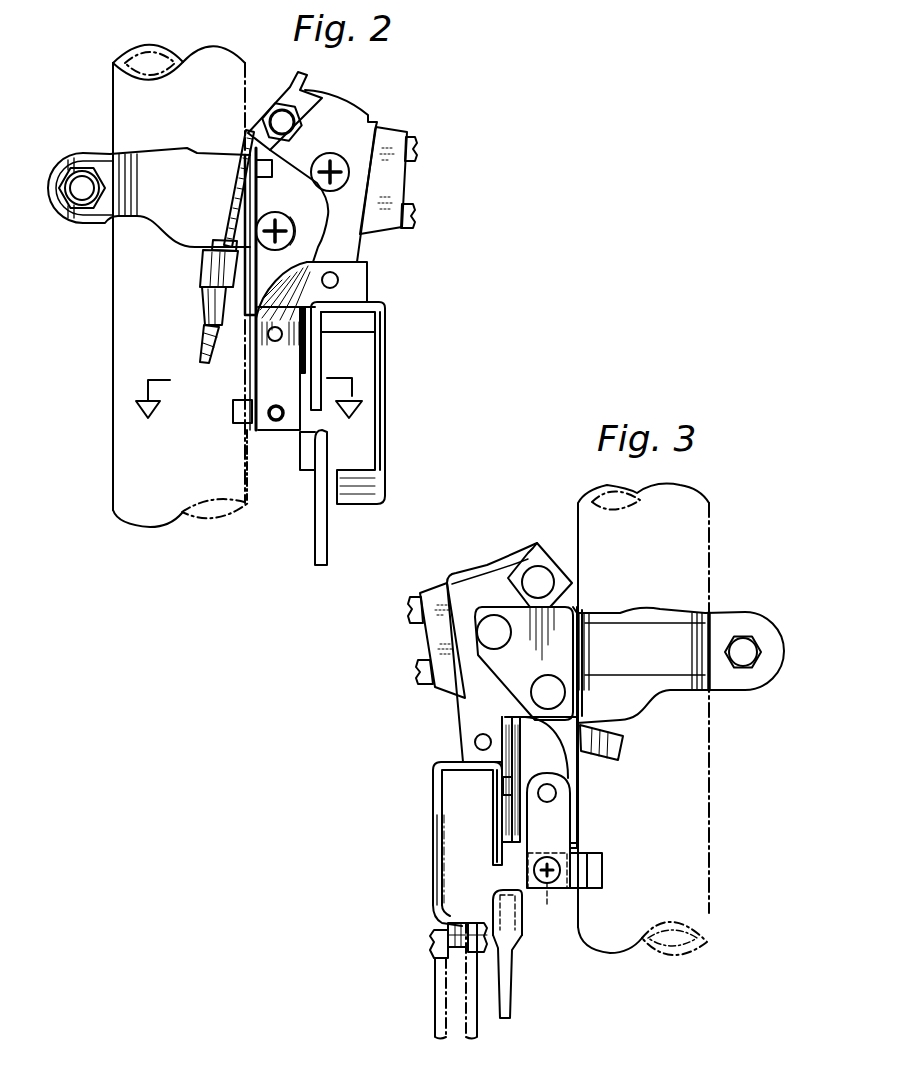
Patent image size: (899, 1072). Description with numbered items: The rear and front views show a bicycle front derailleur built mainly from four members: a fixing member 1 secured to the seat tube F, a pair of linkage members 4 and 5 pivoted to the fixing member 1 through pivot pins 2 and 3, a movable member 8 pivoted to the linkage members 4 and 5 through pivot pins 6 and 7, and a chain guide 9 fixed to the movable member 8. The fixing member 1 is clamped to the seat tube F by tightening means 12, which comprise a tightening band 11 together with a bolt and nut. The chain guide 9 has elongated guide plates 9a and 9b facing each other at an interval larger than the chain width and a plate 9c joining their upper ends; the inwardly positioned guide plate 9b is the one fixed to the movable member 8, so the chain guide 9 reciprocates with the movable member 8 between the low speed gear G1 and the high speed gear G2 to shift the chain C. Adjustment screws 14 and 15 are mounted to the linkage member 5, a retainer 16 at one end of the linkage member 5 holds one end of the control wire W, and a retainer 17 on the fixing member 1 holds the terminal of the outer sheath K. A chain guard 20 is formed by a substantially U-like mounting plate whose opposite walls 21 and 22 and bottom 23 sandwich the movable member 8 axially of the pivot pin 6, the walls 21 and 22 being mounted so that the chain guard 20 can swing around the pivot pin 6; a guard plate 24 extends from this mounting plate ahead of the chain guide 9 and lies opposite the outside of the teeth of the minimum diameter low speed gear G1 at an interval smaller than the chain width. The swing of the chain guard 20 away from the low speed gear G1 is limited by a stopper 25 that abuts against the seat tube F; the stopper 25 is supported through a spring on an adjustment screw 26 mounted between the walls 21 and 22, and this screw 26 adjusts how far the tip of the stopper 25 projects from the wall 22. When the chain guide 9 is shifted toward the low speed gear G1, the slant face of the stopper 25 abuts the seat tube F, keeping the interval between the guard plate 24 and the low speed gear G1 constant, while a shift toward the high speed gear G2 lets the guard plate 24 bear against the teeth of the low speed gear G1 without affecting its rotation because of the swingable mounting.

In FIG. 2, the fixing member 1 is at (322, 218).
In FIG. 3, the fixing member 1 is at (530, 625).
In FIG. 2, the pivot pin 2 is at (294, 236).
In FIG. 3, the pivot pin 2 is at (545, 690).
In FIG. 2, the pivot pin 3 is at (337, 168).
In FIG. 3, the pivot pin 3 is at (488, 630).
In FIG. 2, the linkage member 4 is at (262, 267).
In FIG. 3, the linkage member 4 is at (567, 752).
In FIG. 2, the linkage member 5 is at (366, 202).
In FIG. 3, the linkage member 5 is at (478, 674).
In FIG. 2, the pivot pin 6 is at (271, 340).
In FIG. 3, the pivot pin 6 is at (556, 794).
In FIG. 2, the pivot pin 7 is at (339, 280).
In FIG. 3, the pivot pin 7 is at (474, 742).
In FIG. 2, the movable member 8 is at (358, 292).
In FIG. 2, the chain guide 9 is at (386, 342).
In FIG. 3, the chain guide 9 is at (430, 774).
In FIG. 2, the guide plate 9a is at (384, 400).
In FIG. 3, the guide plate 9a is at (433, 800).
In FIG. 2, the guide plate 9b is at (324, 366).
In FIG. 3, the guide plate 9b is at (493, 812).
In FIG. 2, the plate 9c is at (372, 318).
In FIG. 2, the tightening band 11 is at (96, 208).
In FIG. 3, the tightening band 11 is at (722, 672).
In FIG. 2, the tightening means 12 is at (78, 192).
In FIG. 3, the tightening means 12 is at (750, 657).
In FIG. 2, the adjustment screw 14 is at (418, 148).
In FIG. 3, the adjustment screw 14 is at (409, 603).
In FIG. 2, the adjustment screw 15 is at (416, 214).
In FIG. 3, the adjustment screw 15 is at (416, 668).
In FIG. 2, the retainer 16 is at (303, 112).
In FIG. 3, the retainer 16 is at (541, 578).
In FIG. 2, the retainer 17 is at (205, 268).
In FIG. 3, the retainer 17 is at (620, 745).
In FIG. 2, the chain guard 20 is at (290, 432).
In FIG. 3, the chain guard 20 is at (577, 846).
In FIG. 3, the wall 21 is at (562, 828).
In FIG. 2, the wall 22 is at (262, 378).
In FIG. 3, the bottom 23 is at (567, 895).
In FIG. 2, the guard plate 24 is at (314, 520).
In FIG. 3, the guard plate 24 is at (510, 980).
In FIG. 2, the stopper 25 is at (243, 423).
In FIG. 3, the stopper 25 is at (600, 876).
In FIG. 2, the adjustment screw 26 is at (272, 408).
In FIG. 3, the adjustment screw 26 is at (526, 912).
In FIG. 2, the seat tube F is at (113, 446).
In FIG. 3, the seat tube F is at (709, 787).
In FIG. 2, the outer sheath K is at (203, 306).
In FIG. 2, the control wire W is at (205, 342).
In FIG. 3, the chain C is at (435, 904).
In FIG. 3, the low speed gear G1 is at (478, 1028).
In FIG. 3, the high speed gear G2 is at (440, 1022).